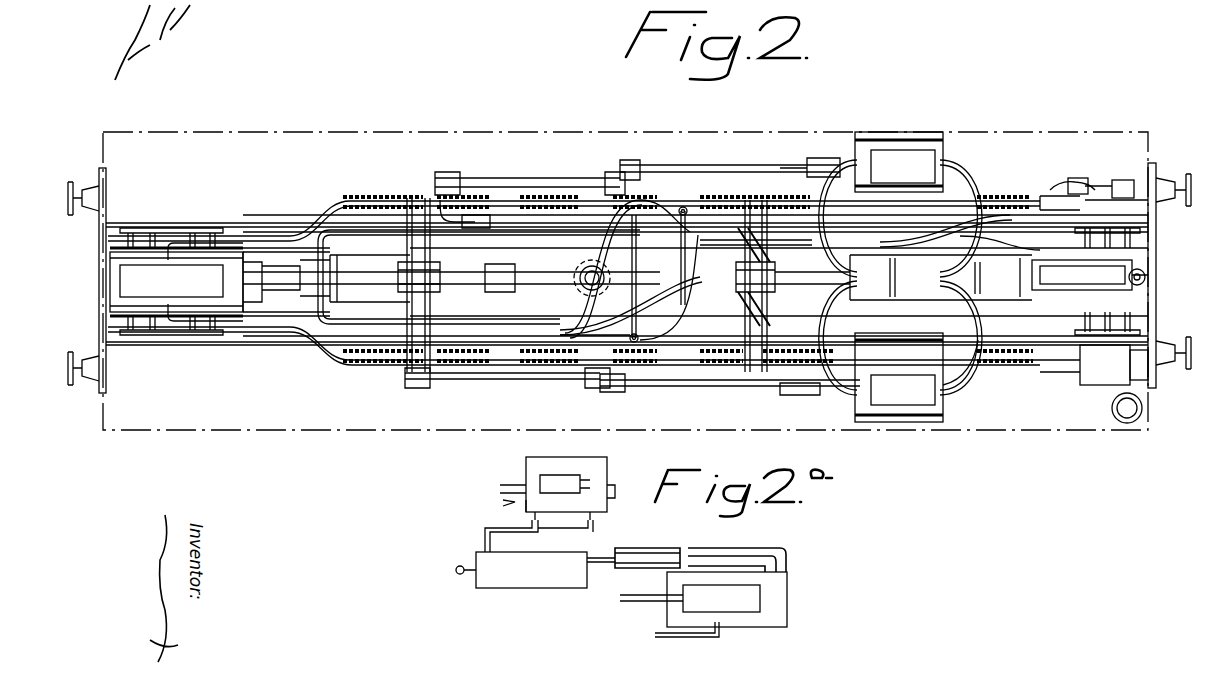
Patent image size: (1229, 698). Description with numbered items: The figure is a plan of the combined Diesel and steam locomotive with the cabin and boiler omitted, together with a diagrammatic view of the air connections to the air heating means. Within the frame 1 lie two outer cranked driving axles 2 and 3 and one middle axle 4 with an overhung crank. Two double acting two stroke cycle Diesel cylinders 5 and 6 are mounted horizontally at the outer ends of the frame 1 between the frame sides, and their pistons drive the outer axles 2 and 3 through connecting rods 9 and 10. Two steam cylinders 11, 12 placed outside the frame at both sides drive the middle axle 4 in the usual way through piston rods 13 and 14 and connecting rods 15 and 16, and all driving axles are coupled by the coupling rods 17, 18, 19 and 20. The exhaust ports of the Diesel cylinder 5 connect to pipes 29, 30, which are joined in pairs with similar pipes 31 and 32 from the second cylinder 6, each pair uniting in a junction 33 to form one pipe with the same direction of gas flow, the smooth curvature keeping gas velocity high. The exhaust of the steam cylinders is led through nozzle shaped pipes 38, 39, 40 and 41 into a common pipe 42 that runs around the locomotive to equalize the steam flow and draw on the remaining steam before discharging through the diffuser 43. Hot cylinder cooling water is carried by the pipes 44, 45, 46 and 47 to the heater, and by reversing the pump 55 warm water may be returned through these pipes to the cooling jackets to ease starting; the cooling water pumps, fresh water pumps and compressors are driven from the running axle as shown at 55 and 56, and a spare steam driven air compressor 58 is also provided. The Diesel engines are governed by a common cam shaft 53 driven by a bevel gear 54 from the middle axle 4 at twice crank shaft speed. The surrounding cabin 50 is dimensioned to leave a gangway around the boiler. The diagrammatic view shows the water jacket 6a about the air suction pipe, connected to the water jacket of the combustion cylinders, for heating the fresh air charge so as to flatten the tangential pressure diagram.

In FIG. 2, the frame 1 is at (258, 222).
In FIG. 2, the cranked driving axle 2 is at (430, 312).
In FIG. 2, the cranked driving axle 3 is at (748, 308).
In FIG. 2, the middle axle 4 is at (565, 335).
In FIG. 2, the Diesel cylinder 5 is at (143, 314).
In FIG. 2, the Diesel cylinder 6 is at (1140, 300).
In FIG. 2A, the water jacket 6a is at (785, 622).
In FIG. 2, the connecting rod 9 is at (370, 280).
In FIG. 2, the connecting rod 10 is at (852, 282).
In FIG. 2, the steam cylinder 11 is at (878, 415).
In FIG. 2, the steam cylinder 12 is at (906, 132).
In FIG. 2A, the steam cylinder 12 is at (605, 474).
In FIG. 2, the piston rod 13 is at (842, 392).
In FIG. 2, the piston rod 14 is at (848, 163).
In FIG. 2A, the piston rod 14 is at (512, 484).
In FIG. 2, the connecting rod 15 is at (715, 390).
In FIG. 2, the connecting rod 16 is at (752, 166).
In FIG. 2, the coupling rod 17 is at (512, 381).
In FIG. 2, the coupling rod 18 is at (662, 388).
In FIG. 2, the coupling rod 19 is at (518, 180).
In FIG. 2, the coupling rod 20 is at (690, 170).
In FIG. 2, the exhaust pipe 29 is at (322, 200).
In FIG. 2, the exhaust pipe 30 is at (322, 361).
In FIG. 2, the exhaust pipe 31 is at (956, 176).
In FIG. 2, the exhaust pipe 32 is at (952, 385).
In FIG. 2A, the exhaust pipe 32 is at (668, 634).
In FIG. 2, the junction 33 is at (637, 245).
In FIG. 2, the steam exhaust pipe 38 is at (822, 304).
In FIG. 2, the steam exhaust pipe 39 is at (958, 300).
In FIG. 2, the steam exhaust pipe 40 is at (826, 240).
In FIG. 2, the steam exhaust pipe 41 is at (962, 232).
In FIG. 2, the common pipe 42 is at (336, 236).
In FIG. 2, the diffuser 43 is at (1148, 277).
In FIG. 2, the cooling water pipe 44 is at (285, 252).
In FIG. 2, the cooling water pipe 45 is at (1100, 200).
In FIG. 2, the cooling water pipe 46 is at (1058, 180).
In FIG. 2, the cooling water pipe 47 is at (448, 218).
In FIG. 2, the cabin 50 is at (302, 432).
In FIG. 2, the cam shaft 53 is at (445, 274).
In FIG. 2A, the cam shaft 53 is at (646, 610).
In FIG. 2, the bevel gear 54 is at (604, 292).
In FIG. 2, the pump 55 is at (1092, 178).
In FIG. 2, the pump drive 56 is at (1098, 382).
In FIG. 2, the spare steam driven air compressor 58 is at (1118, 420).